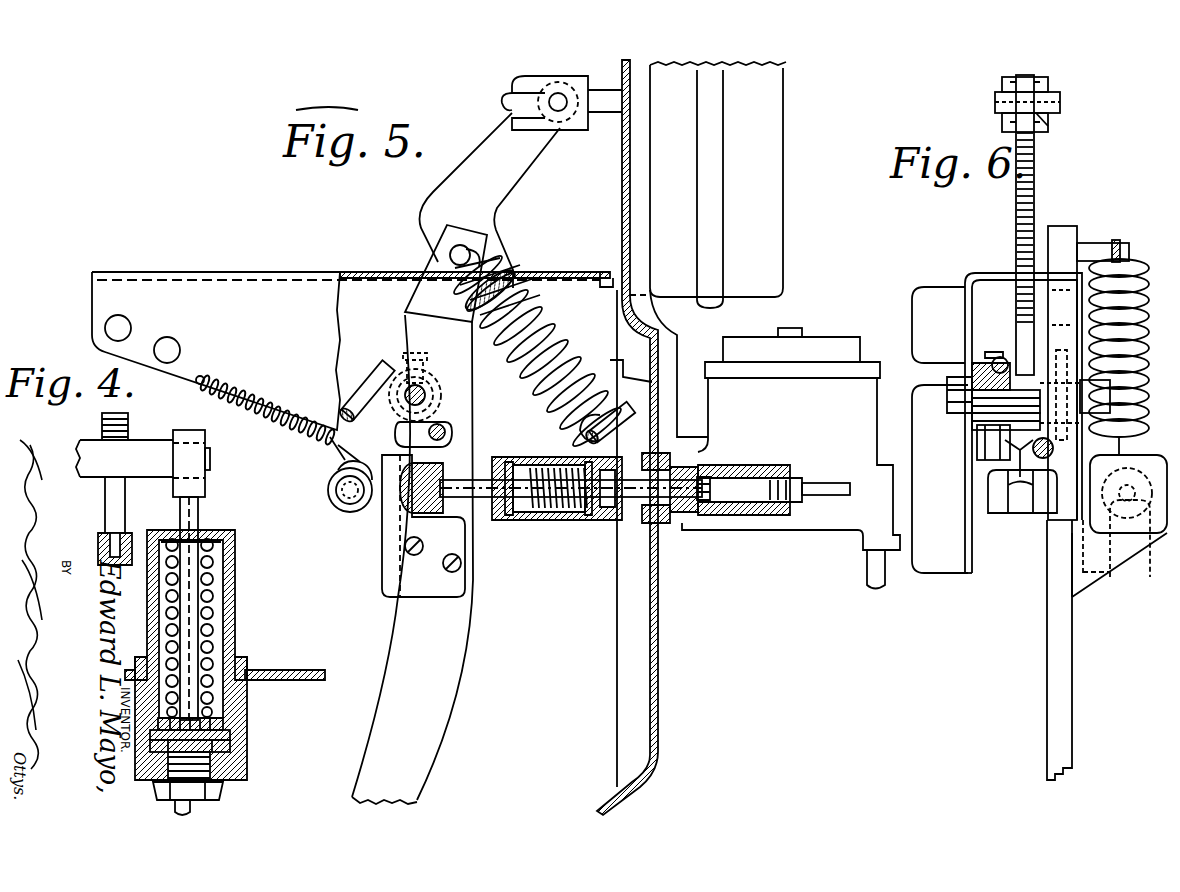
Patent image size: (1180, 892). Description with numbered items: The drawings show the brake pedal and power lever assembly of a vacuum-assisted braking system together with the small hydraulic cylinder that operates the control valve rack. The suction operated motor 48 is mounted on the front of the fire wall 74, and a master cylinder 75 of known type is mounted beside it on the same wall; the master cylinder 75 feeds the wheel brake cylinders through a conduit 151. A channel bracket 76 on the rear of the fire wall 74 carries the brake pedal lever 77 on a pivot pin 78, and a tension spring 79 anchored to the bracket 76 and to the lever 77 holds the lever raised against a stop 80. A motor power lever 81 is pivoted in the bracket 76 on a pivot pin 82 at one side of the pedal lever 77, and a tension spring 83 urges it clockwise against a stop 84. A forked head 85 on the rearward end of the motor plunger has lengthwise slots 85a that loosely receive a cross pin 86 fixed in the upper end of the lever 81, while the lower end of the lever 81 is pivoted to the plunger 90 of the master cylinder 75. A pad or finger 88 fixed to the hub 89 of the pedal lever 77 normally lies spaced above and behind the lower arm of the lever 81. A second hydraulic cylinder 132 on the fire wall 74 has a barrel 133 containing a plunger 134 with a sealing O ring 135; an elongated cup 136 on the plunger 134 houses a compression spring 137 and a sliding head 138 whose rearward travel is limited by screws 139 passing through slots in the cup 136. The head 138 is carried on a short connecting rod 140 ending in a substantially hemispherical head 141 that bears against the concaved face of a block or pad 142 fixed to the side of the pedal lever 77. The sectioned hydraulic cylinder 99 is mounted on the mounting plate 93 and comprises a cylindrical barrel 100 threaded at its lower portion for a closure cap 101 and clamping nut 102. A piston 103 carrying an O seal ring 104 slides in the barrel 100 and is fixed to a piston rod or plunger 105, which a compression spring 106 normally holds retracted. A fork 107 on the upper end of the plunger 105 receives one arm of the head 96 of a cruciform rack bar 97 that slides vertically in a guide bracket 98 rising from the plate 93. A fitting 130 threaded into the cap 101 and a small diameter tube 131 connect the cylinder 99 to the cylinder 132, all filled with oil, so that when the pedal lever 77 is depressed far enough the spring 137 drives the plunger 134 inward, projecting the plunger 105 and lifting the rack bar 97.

In FIG. 5, the suction operated motor 48 is at (795, 138).
In FIG. 5, the fire wall 74 is at (621, 178).
In FIG. 5, the master cylinder 75 is at (809, 327).
In FIG. 5, the channel bracket 76 is at (188, 272).
In FIG. 6, the channel bracket 76 is at (978, 272).
In FIG. 5, the brake pedal lever 77 is at (432, 711).
In FIG. 6, the brake pedal lever 77 is at (1047, 649).
In FIG. 5, the pivot pin 78 is at (420, 372).
In FIG. 6, the pivot pin 78 is at (1062, 400).
In FIG. 5, the tension spring 79 is at (548, 335).
In FIG. 6, the tension spring 79 is at (1147, 262).
In FIG. 5, the stop 80 is at (492, 268).
In FIG. 6, the stop 80 is at (1048, 308).
In FIG. 5, the motor power lever 81 is at (498, 143).
In FIG. 6, the motor power lever 81 is at (1035, 168).
In FIG. 5, the pivot pin 82 is at (447, 432).
In FIG. 6, the pivot pin 82 is at (1046, 455).
In FIG. 5, the tension spring 83 is at (340, 442).
In FIG. 6, the tension spring 83 is at (1033, 450).
In FIG. 5, the stop 84 is at (328, 486).
In FIG. 6, the stop 84 is at (978, 447).
In FIG. 5, the forked head 85 is at (575, 80).
In FIG. 6, the forked head 85 is at (1026, 77).
In FIG. 5, the lengthwise slots 85a is at (512, 95).
In FIG. 6, the lengthwise slots 85a is at (1050, 118).
In FIG. 5, the cross pin 86 is at (556, 92).
In FIG. 6, the cross pin 86 is at (1062, 100).
In FIG. 5, the pad or finger 88 is at (376, 377).
In FIG. 6, the pad or finger 88 is at (1040, 402).
In FIG. 5, the hub 89 is at (453, 428).
In FIG. 6, the hub 89 is at (1035, 370).
In FIG. 5, the plunger 90 is at (478, 500).
In FIG. 6, the plunger 90 is at (1022, 515).
In FIG. 4, the mounting plate 93 is at (293, 680).
In FIG. 4, the head 96 is at (104, 458).
In FIG. 4, the rack bar 97 is at (102, 427).
In FIG. 4, the guide bracket 98 is at (125, 533).
In FIG. 4, the hydraulic cylinder 99 is at (243, 583).
In FIG. 4, the cylindrical barrel 100 is at (228, 627).
In FIG. 4, the closure cap 101 is at (225, 722).
In FIG. 4, the clamping nut 102 is at (240, 662).
In FIG. 4, the piston 103 is at (232, 746).
In FIG. 4, the O seal ring 104 is at (232, 734).
In FIG. 4, the piston rod or plunger 105 is at (199, 512).
In FIG. 4, the compression spring 106 is at (212, 560).
In FIG. 4, the fork 107 is at (196, 420).
In FIG. 4, the fitting 130 is at (223, 790).
In FIG. 4, the small diameter tube 131 is at (190, 806).
In FIG. 5, the small diameter tube 131 is at (830, 483).
In FIG. 5, the hydraulic cylinder 132 is at (750, 524).
In FIG. 5, the barrel 133 is at (760, 466).
In FIG. 5, the plunger 134 is at (678, 488).
In FIG. 5, the sealing O ring 135 is at (703, 505).
In FIG. 5, the elongated cup 136 is at (607, 521).
In FIG. 5, the compression spring 137 is at (560, 515).
In FIG. 5, the head 138 is at (588, 522).
In FIG. 5, the screws 139 is at (508, 522).
In FIG. 6, the short connecting rod 140 is at (1130, 520).
In FIG. 5, the substantially hemispherical head 141 is at (432, 515).
In FIG. 6, the substantially hemispherical head 141 is at (1118, 540).
In FIG. 5, the block or pad 142 is at (392, 520).
In FIG. 6, the block or pad 142 is at (1108, 600).
In FIG. 5, the conduit 151 is at (867, 575).